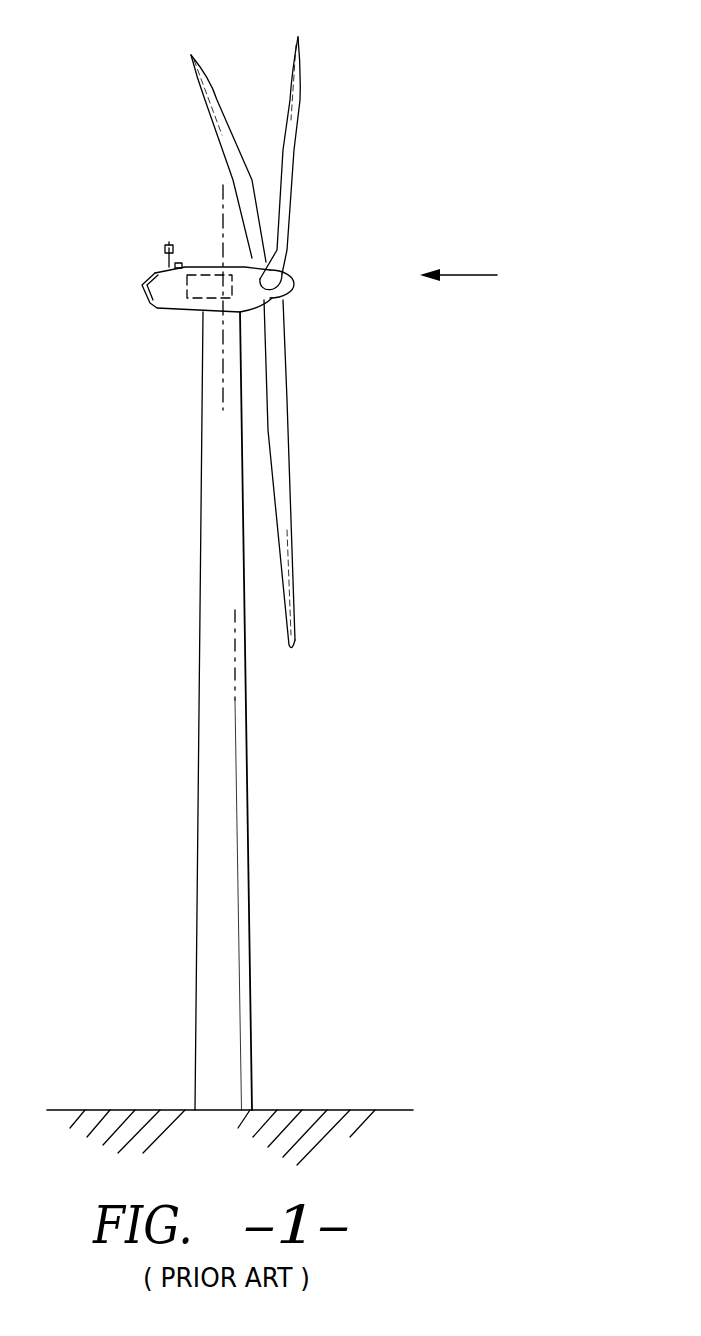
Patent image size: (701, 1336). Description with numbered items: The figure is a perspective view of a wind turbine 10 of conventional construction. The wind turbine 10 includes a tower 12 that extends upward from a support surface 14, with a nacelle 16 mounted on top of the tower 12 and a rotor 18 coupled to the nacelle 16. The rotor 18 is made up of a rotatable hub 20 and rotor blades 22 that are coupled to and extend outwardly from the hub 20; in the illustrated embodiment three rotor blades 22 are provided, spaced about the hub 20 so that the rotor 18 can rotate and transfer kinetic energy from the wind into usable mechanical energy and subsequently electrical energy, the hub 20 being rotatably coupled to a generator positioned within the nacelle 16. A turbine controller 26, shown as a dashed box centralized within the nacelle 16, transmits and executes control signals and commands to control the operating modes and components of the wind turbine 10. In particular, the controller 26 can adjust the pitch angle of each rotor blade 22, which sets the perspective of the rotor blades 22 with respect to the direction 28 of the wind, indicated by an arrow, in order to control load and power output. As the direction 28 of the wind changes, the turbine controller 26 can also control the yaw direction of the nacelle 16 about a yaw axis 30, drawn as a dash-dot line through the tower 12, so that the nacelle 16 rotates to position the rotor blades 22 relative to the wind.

The wind turbine 10 is at (431, 72).
The tower 12 is at (208, 818).
The support surface 14 is at (127, 1110).
The nacelle 16 is at (180, 315).
The rotor 18 is at (289, 331).
The rotatable hub 20 is at (287, 297).
The rotor blade 22 is at (290, 75).
The turbine controller 26 is at (213, 270).
The direction of the wind 28 is at (470, 273).
The yaw axis 30 is at (222, 208).